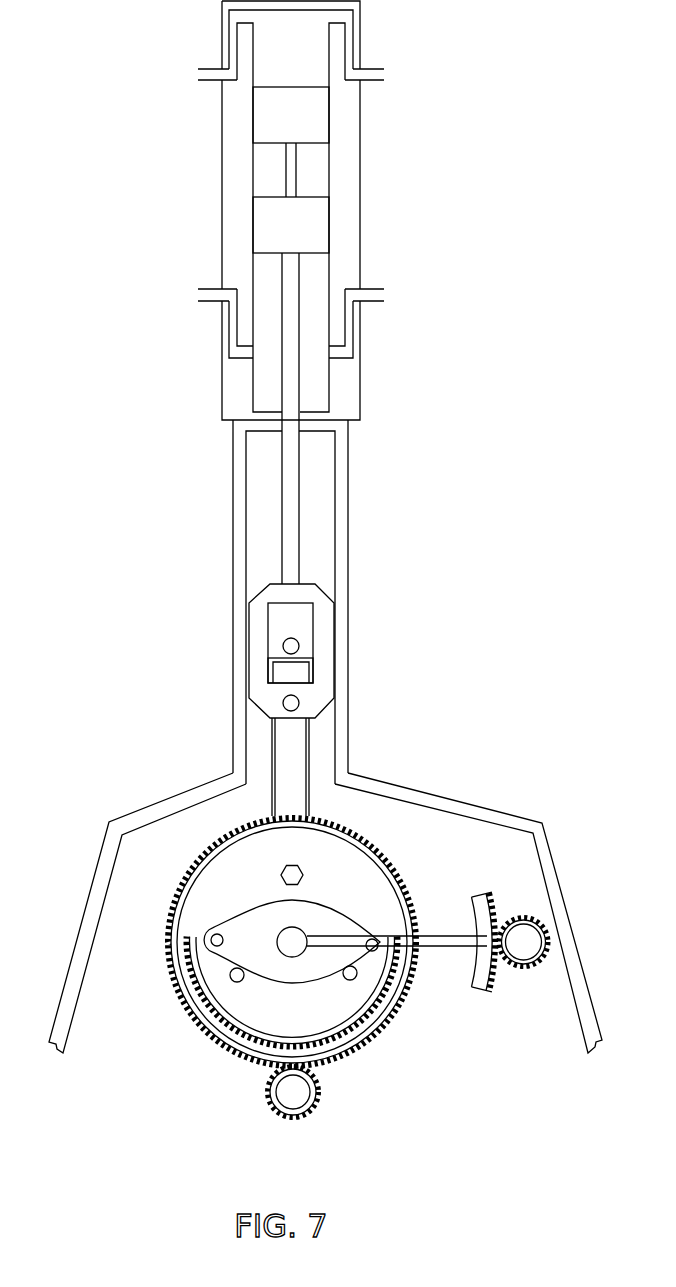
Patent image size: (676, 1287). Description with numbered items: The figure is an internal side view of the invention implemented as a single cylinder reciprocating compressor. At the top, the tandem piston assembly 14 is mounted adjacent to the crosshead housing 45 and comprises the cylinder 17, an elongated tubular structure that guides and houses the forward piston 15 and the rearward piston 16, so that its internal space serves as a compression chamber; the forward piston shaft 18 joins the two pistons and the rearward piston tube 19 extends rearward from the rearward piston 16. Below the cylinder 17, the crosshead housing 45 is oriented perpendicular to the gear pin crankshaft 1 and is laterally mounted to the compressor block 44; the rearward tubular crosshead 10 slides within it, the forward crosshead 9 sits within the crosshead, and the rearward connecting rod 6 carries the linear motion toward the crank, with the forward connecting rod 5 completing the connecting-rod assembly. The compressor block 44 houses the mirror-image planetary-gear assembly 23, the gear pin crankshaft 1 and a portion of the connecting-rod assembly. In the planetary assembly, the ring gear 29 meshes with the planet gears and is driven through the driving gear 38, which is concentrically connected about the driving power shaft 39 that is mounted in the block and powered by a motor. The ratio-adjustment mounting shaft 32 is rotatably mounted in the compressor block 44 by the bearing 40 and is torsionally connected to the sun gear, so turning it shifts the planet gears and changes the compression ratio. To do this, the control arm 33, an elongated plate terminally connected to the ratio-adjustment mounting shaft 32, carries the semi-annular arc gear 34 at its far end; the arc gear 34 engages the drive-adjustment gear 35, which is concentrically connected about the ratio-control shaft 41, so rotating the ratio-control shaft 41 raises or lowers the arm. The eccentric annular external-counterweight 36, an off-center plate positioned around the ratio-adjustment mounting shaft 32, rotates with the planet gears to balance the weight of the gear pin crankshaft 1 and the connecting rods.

The gear pin crankshaft 1 is at (249, 1069).
The forward connecting rod 5 is at (268, 672).
The rearward connecting rod 6 is at (306, 800).
The forward crosshead 9 is at (305, 640).
The rearward tubular crosshead 10 is at (334, 672).
The tandem piston assembly 14 is at (126, 201).
The forward piston 15 is at (279, 130).
The rearward piston 16 is at (279, 240).
The cylinder 17 is at (231, 194).
The forward piston shaft 18 is at (296, 157).
The rearward piston tube 19 is at (282, 470).
The mirror-image planetary-gear assembly 23 is at (145, 1022).
The ring gear 29 is at (196, 866).
The ratio-adjustment mounting shaft 32 is at (300, 947).
The control arm 33 is at (447, 936).
The arc gear 34 is at (491, 893).
The drive-adjustment gear 35 is at (523, 967).
The eccentric annular external-counterweight 36 is at (231, 1010).
The driving gear 38 is at (318, 1095).
The driving power shaft 39 is at (283, 1103).
The bearing 40 is at (235, 951).
The ratio-control shaft 41 is at (513, 953).
The compressor block 44 is at (91, 915).
The crosshead housing 45 is at (233, 563).